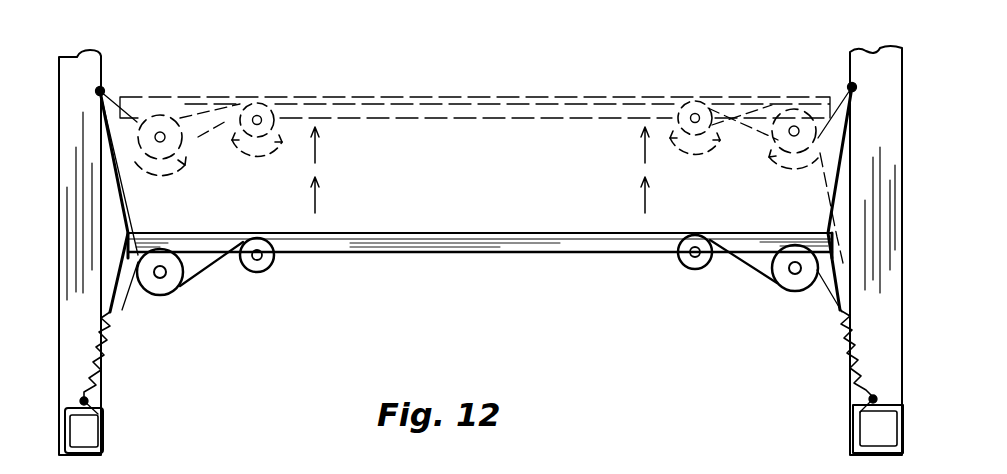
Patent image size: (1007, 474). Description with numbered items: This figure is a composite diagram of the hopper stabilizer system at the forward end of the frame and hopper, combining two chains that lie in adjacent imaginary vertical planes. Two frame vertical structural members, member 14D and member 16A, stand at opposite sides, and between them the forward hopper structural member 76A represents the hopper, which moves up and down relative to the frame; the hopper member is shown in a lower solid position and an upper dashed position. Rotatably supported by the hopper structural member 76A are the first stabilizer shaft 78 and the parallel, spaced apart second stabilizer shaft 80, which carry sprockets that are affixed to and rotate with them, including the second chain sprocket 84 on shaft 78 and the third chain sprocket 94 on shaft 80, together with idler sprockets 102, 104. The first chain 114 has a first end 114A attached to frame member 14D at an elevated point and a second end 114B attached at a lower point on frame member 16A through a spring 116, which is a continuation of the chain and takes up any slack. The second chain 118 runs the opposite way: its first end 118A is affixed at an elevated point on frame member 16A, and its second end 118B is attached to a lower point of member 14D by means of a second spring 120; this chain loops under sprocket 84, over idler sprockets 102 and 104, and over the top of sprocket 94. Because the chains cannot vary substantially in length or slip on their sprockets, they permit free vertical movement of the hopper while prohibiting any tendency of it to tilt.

The frame vertical structural member 14D is at (100, 67).
The frame vertical structural member 16A is at (862, 192).
The forward hopper structural member 76A is at (467, 254).
The first stabilizer shaft 78 is at (790, 276).
The second stabilizer shaft 80 is at (162, 280).
The second chain sprocket 84 is at (771, 100).
The third chain sprocket 94 is at (172, 97).
The idler sprocket 102 is at (688, 100).
The idler sprocket 104 is at (258, 103).
The first chain 114 is at (123, 200).
The first end of first chain 114A is at (100, 91).
The second end of first chain 114B is at (858, 432).
The spring 116 is at (857, 383).
The second chain 118 is at (218, 236).
The first end of second chain 118A is at (852, 87).
The second end of second chain 118B is at (88, 408).
The second spring 120 is at (108, 380).